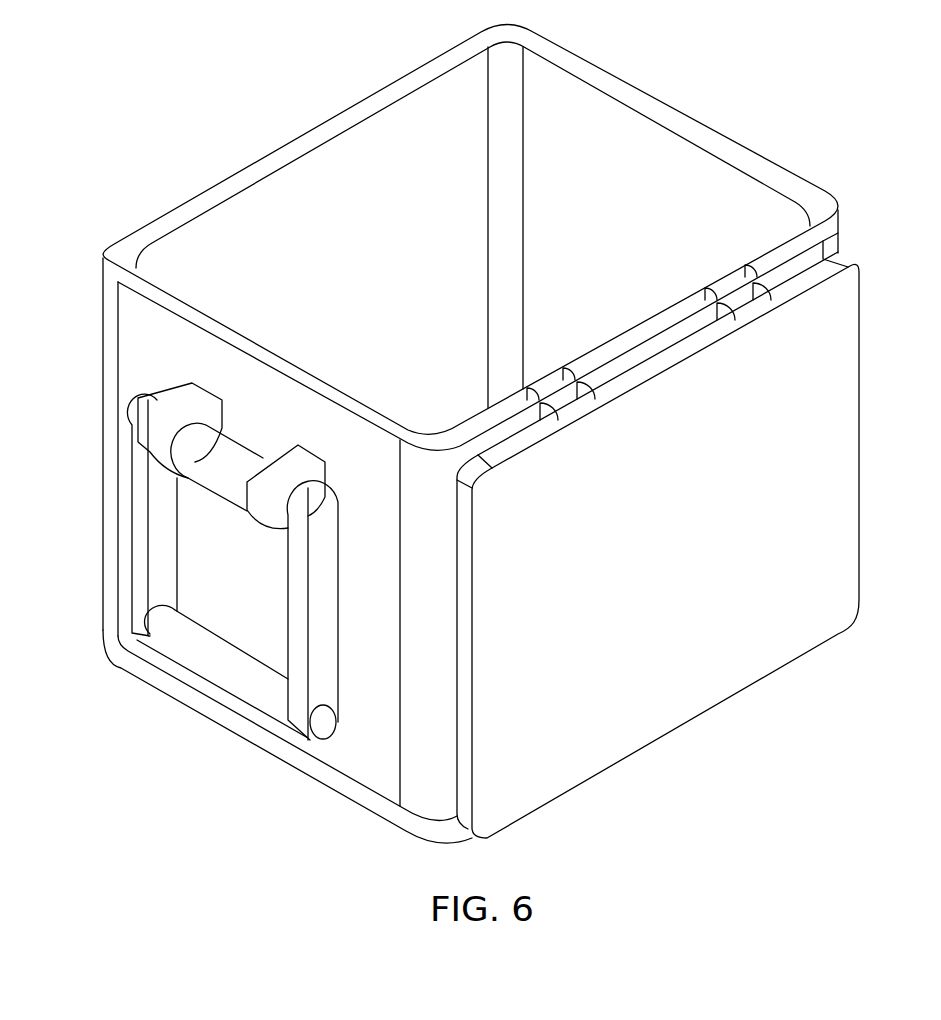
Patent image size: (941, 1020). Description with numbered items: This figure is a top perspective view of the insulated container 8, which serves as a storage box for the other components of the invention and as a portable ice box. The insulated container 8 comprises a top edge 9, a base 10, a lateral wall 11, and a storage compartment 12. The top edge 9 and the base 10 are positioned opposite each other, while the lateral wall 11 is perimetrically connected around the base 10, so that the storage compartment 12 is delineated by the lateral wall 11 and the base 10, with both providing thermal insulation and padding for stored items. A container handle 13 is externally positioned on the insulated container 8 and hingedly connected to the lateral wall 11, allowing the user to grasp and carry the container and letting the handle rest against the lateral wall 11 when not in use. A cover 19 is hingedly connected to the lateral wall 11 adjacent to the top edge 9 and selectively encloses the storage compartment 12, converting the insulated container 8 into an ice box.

The insulated container 8 is at (72, 506).
The top edge 9 is at (258, 163).
The base 10 is at (185, 700).
The lateral wall 11 is at (105, 318).
The storage compartment 12 is at (645, 148).
The container handle 13 is at (332, 655).
The cover 19 is at (852, 462).